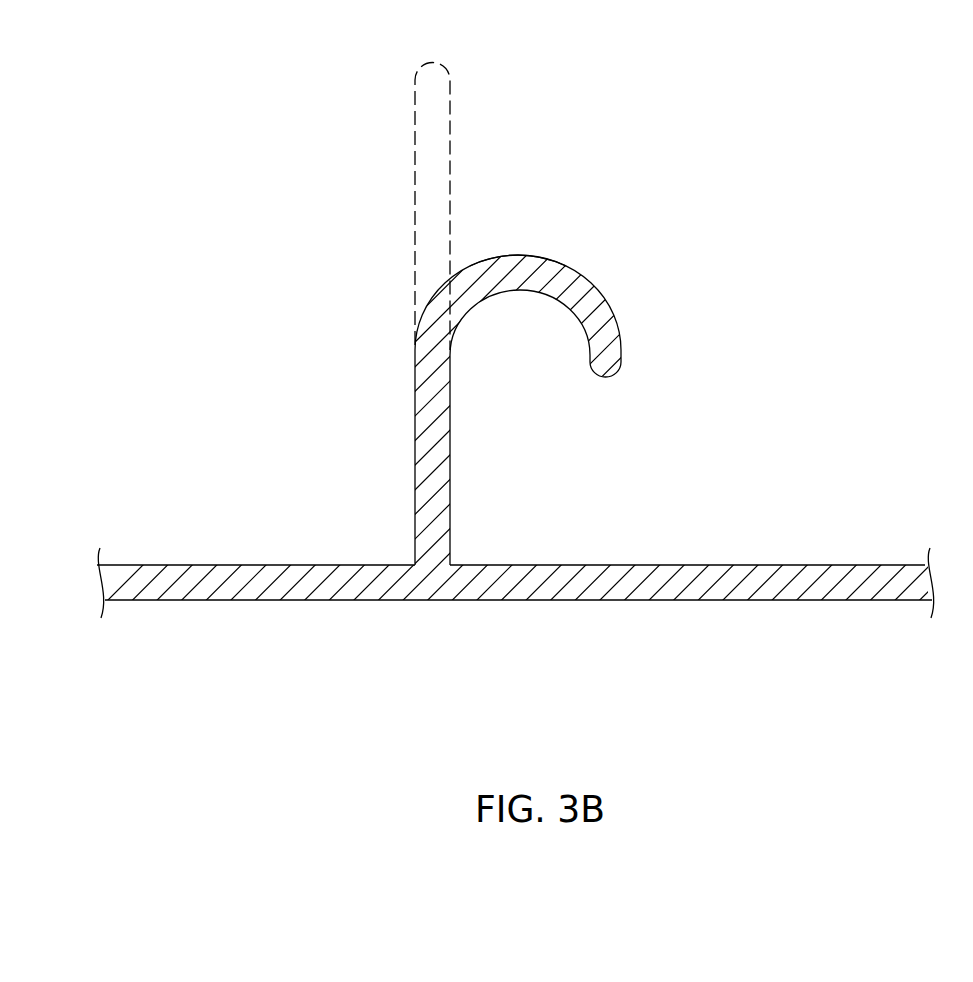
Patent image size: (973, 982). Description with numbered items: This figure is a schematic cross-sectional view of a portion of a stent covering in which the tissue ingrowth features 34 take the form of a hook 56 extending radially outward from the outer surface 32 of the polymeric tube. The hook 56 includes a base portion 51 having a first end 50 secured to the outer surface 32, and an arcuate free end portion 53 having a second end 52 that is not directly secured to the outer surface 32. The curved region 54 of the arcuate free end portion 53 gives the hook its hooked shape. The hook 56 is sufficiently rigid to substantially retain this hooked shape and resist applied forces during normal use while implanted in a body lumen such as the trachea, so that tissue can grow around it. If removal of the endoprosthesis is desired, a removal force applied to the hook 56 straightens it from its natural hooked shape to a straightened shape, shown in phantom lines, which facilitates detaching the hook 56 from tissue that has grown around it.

The outer surface 32 is at (836, 565).
The tissue ingrowth features 34 is at (530, 342).
The first end 50 is at (415, 563).
The base portion 51 is at (415, 458).
The second end 52 is at (606, 376).
The arcuate free end portion 53 is at (603, 272).
The curved portion of hook 54 is at (520, 255).
The hook 56 is at (415, 381).